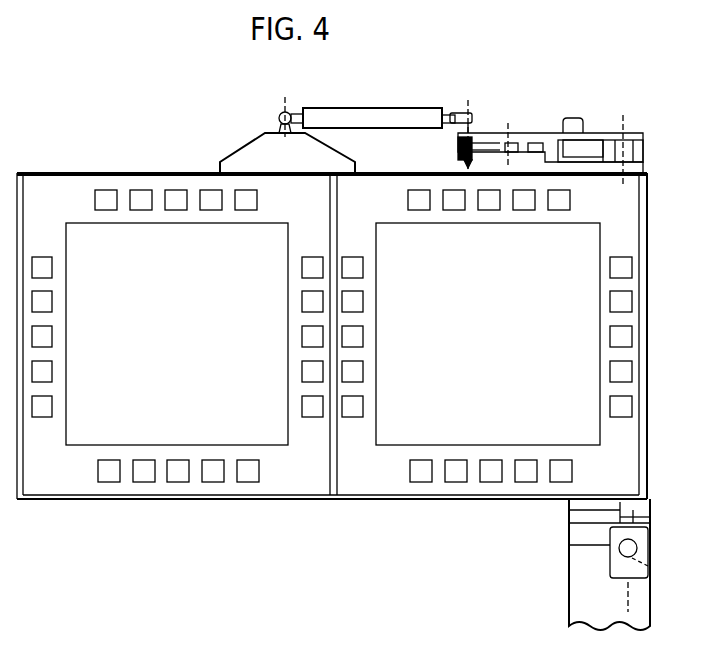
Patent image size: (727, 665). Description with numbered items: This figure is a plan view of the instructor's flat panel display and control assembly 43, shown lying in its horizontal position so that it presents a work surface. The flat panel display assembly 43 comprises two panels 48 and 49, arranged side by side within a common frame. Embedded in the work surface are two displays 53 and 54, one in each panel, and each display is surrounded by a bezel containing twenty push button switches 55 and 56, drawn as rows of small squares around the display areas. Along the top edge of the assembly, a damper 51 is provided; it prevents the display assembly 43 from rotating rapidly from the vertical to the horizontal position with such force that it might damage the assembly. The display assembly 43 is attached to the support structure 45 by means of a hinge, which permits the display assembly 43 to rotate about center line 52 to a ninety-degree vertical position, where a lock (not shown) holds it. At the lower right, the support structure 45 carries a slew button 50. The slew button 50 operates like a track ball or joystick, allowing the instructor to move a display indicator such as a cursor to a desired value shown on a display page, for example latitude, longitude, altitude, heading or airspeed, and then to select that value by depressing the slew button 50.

The flat panel display assembly 43 is at (136, 146).
The support structure 45 is at (569, 606).
The panel 48 is at (88, 500).
The panel 49 is at (420, 499).
The slew button 50 is at (620, 550).
The damper 51 is at (378, 108).
The center line 52 is at (623, 133).
The display 53 is at (183, 365).
The display 54 is at (496, 365).
The push button switches 55 is at (53, 301).
The push button switches 56 is at (612, 300).